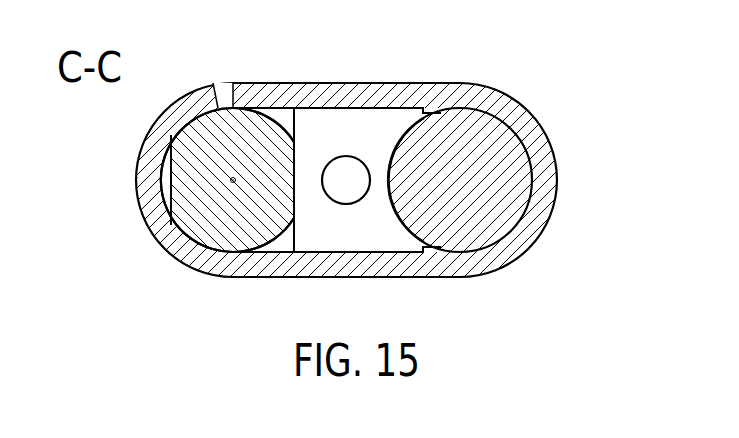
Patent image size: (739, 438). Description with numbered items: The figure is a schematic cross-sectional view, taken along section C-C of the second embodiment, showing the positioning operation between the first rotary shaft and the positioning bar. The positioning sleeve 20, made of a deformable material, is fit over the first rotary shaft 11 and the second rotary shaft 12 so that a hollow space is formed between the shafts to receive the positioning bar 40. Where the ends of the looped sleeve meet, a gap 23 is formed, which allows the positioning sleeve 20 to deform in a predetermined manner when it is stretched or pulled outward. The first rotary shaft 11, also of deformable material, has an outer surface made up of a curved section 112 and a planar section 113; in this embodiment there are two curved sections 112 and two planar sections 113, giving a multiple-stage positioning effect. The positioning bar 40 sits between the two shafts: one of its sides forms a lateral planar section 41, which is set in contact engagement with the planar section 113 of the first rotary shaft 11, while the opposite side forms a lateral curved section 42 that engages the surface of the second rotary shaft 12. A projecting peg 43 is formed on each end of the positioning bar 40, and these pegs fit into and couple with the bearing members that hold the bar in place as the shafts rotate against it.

The positioning sleeve 20 is at (405, 92).
The gap 23 is at (222, 95).
The curved section 112 is at (260, 106).
The first rotary shaft 11 is at (215, 172).
The planar section 113 is at (170, 180).
The lateral planar section 41 is at (298, 184).
The positioning bar 40 is at (350, 135).
The projecting peg 43 is at (340, 175).
The second rotary shaft 12 is at (475, 170).
The lateral curved section 42 is at (384, 190).